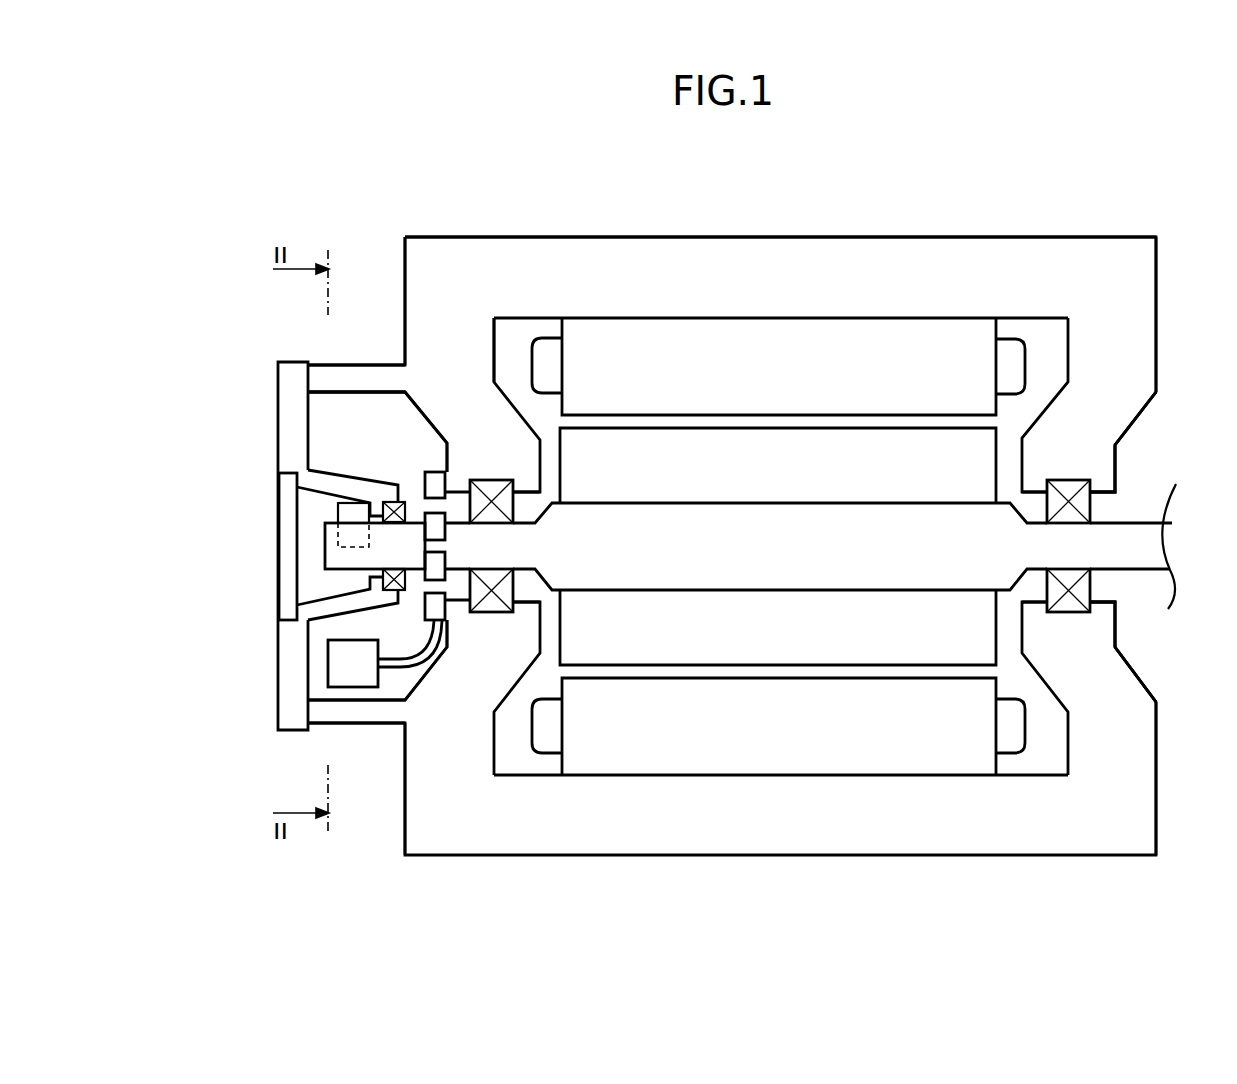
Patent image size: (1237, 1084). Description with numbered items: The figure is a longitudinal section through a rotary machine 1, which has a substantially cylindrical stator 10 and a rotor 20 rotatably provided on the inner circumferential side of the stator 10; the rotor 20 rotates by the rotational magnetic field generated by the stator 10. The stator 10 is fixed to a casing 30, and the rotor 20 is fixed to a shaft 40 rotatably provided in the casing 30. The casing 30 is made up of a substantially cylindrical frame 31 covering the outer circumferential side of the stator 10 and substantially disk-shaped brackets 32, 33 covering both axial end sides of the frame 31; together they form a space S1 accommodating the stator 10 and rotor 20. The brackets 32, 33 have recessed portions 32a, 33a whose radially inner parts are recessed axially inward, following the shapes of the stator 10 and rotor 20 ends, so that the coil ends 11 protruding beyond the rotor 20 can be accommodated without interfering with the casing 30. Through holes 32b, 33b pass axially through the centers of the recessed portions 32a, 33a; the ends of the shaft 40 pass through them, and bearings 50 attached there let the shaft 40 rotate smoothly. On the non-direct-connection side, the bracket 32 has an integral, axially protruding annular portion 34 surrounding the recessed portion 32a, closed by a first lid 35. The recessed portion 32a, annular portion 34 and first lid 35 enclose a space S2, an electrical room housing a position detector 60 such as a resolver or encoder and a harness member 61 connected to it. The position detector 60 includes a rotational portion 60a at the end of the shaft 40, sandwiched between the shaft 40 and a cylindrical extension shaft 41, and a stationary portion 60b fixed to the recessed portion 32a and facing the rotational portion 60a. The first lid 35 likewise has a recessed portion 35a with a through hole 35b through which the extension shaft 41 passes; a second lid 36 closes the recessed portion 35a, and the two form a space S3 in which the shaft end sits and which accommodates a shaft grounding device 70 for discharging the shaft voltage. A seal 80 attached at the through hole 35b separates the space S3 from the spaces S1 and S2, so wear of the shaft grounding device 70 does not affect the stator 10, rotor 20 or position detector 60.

The rotary machine 1 is at (1062, 152).
The stator 10 is at (828, 355).
The coil ends 11 is at (547, 357).
The rotor 20 is at (898, 455).
The casing 30 is at (1088, 238).
The frame 31 is at (753, 272).
The bracket 32 is at (437, 330).
The recessed portion 32a is at (493, 467).
The through hole 32b is at (537, 497).
The bracket 33 is at (1110, 300).
The recessed portion 33a is at (1068, 458).
The through hole 33b is at (1107, 502).
The annular portion 34 is at (366, 368).
The first lid 35 is at (290, 405).
The recessed portion 35a is at (398, 490).
The through hole 35b is at (307, 517).
The second lid 36 is at (282, 567).
The shaft 40 is at (1142, 569).
The extension shaft 41 is at (345, 569).
The bearings 50 is at (492, 612).
The position detector 60 is at (339, 760).
The rotational portion 60a is at (408, 658).
The stationary portion 60b is at (423, 578).
The harness member 61 is at (327, 672).
The shaft grounding device 70 is at (338, 525).
The seal 80 is at (423, 478).
The space S1 is at (513, 333).
The space S2 is at (337, 420).
The space S3 is at (317, 522).